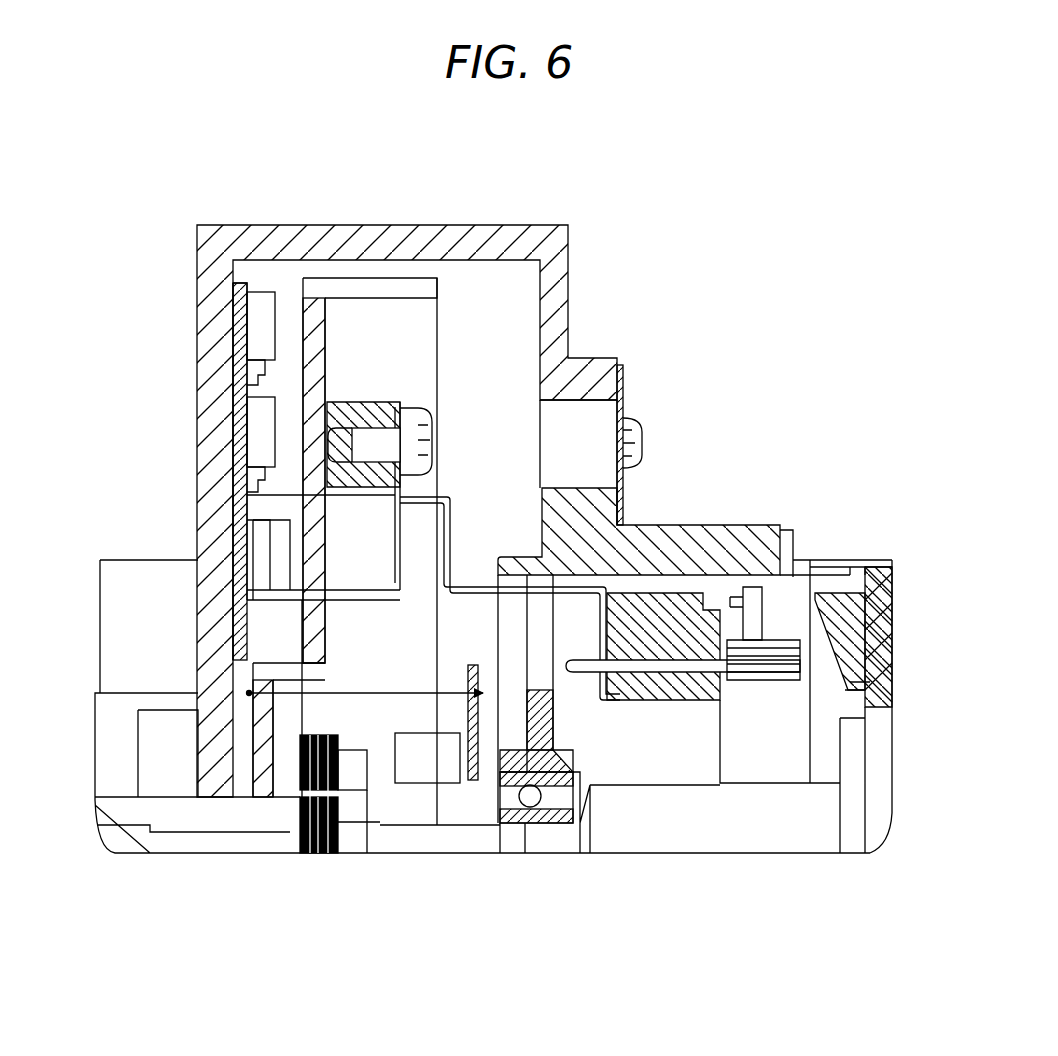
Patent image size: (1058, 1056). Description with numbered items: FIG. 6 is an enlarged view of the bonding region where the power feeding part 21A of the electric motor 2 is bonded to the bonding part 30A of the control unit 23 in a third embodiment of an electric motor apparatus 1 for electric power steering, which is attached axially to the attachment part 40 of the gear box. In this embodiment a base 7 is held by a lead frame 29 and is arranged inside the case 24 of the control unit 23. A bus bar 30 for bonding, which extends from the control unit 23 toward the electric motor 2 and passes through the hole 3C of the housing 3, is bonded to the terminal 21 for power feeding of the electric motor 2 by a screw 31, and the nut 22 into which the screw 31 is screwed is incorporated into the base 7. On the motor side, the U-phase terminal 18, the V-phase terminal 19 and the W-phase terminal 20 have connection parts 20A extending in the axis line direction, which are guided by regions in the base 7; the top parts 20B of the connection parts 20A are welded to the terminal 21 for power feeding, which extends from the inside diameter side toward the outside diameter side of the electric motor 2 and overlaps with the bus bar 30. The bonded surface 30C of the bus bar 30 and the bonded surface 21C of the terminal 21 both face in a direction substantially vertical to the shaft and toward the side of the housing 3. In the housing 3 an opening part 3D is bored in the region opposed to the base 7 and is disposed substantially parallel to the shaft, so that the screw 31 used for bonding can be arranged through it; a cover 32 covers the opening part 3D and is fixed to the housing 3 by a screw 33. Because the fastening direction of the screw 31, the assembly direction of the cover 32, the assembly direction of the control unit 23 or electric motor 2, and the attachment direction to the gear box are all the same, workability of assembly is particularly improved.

The electric motor apparatus 1 is at (814, 538).
The electric motor 2 is at (845, 560).
The housing 3 is at (740, 540).
The hole 3C is at (535, 668).
The opening part 3D is at (578, 428).
The base 7 is at (352, 408).
The U-phase terminal 18 is at (832, 620).
The V-phase terminal 19 is at (795, 640).
The W-phase terminal 20 is at (830, 690).
The connection part 20A is at (718, 683).
The top part 20B is at (600, 675).
The terminal for power feeding 21 is at (612, 612).
The power feeding part 21A is at (412, 545).
The bonded surface 21C is at (435, 445).
The nut 22 is at (335, 400).
The control unit 23 is at (190, 405).
The case 24 is at (203, 275).
The lead frame 29 is at (303, 283).
The bus bar for bonding 30 is at (258, 652).
The bonding part 30A is at (300, 515).
The bonded surface 30C is at (300, 492).
The screw 31 is at (430, 430).
The cover 32 is at (620, 378).
The screw 33 is at (640, 440).
The attachment part 40 is at (140, 588).